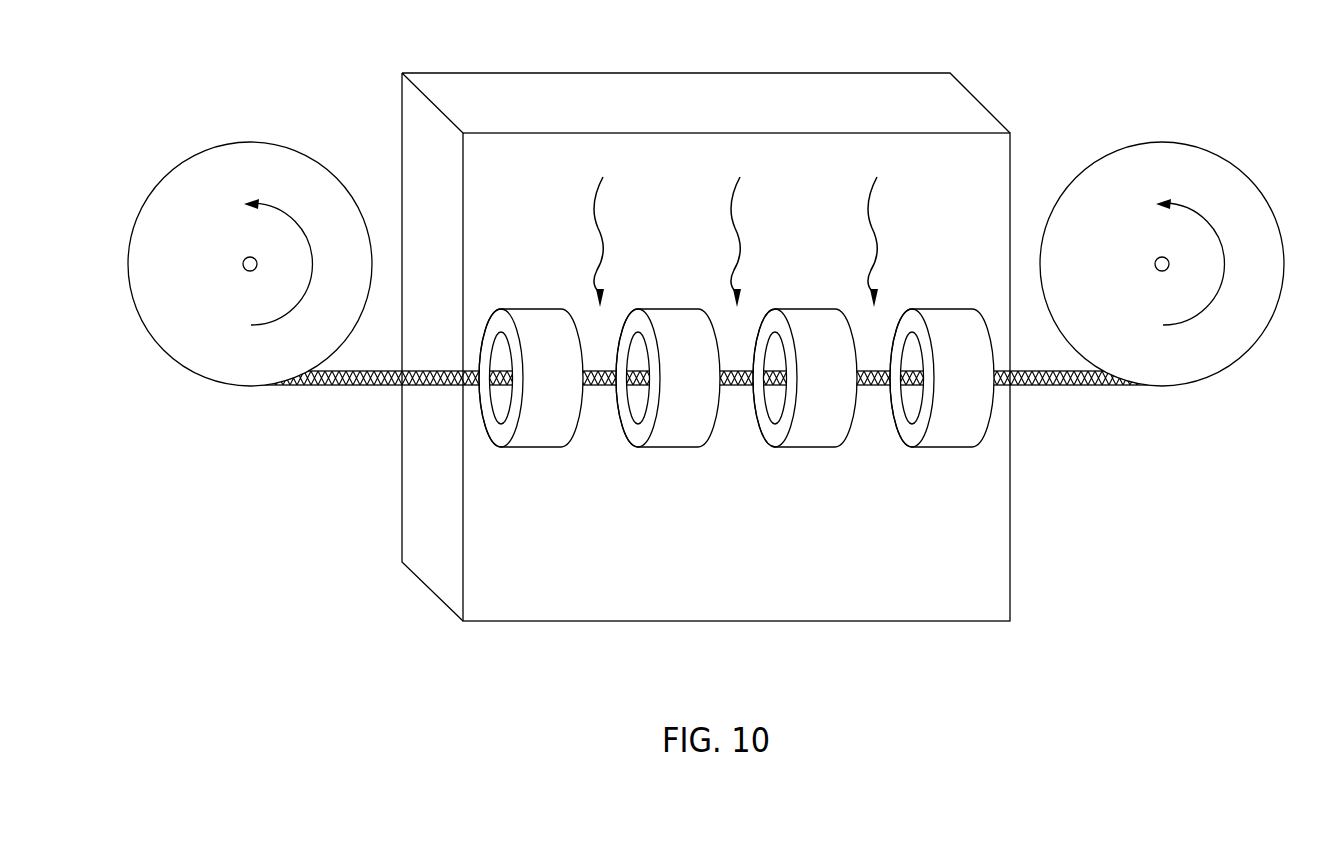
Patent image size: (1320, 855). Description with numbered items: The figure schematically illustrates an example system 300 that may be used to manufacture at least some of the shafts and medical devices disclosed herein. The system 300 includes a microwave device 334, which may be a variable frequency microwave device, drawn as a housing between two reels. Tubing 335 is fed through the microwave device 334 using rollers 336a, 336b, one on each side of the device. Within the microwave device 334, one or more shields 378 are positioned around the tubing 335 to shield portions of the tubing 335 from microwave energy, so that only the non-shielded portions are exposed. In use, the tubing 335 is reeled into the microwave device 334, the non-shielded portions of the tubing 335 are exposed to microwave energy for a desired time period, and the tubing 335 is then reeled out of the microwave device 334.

The system 300 is at (1008, 78).
The microwave device 334 is at (676, 73).
The tubing 335 is at (367, 387).
The roller 336a is at (253, 142).
The roller 336b is at (1163, 142).
The shield 378 is at (676, 440).